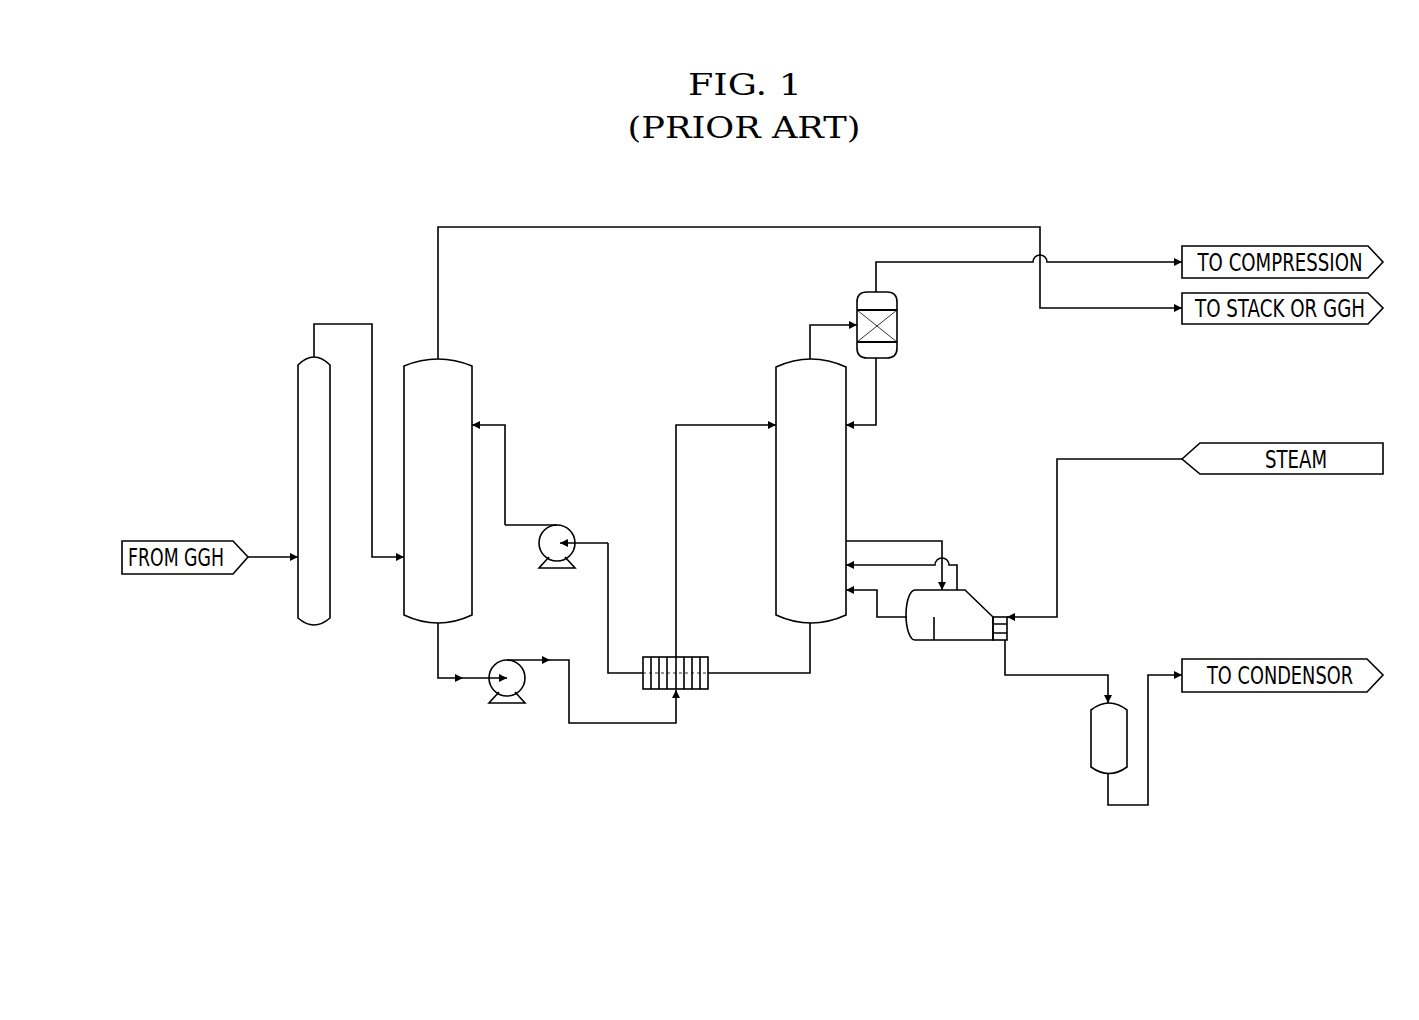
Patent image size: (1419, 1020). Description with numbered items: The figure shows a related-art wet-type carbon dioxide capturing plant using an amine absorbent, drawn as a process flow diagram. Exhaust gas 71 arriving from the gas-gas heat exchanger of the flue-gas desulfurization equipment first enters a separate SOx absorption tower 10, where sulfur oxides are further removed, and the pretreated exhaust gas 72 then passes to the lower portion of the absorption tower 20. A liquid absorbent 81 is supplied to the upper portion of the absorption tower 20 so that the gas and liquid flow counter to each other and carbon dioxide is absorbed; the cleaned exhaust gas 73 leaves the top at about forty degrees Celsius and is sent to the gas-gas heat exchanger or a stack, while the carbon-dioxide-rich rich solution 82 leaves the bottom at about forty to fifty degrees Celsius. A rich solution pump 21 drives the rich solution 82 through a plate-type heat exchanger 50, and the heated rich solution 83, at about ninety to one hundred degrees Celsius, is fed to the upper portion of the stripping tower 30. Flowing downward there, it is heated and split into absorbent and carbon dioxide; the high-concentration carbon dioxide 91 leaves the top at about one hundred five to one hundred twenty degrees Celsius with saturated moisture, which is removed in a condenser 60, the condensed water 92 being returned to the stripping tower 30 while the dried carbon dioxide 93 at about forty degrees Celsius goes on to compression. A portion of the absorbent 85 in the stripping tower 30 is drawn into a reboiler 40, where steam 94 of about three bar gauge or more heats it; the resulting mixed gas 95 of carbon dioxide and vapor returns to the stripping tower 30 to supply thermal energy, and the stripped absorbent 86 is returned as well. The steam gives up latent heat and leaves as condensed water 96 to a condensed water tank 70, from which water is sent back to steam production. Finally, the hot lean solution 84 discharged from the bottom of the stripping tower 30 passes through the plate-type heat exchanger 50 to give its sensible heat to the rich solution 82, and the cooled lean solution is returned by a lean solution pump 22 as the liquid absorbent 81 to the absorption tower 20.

The SOx absorption tower 10 is at (314, 628).
The absorption tower 20 is at (465, 360).
The stripping tower 30 is at (776, 390).
The reboiler 40 is at (960, 642).
The plate-type heat exchanger 50 is at (660, 655).
The condenser 60 is at (897, 325).
The condensed water tank 70 is at (1091, 736).
The rich solution pump 21 is at (505, 706).
The lean solution pump 22 is at (557, 575).
The exhaust gas 71 is at (262, 555).
The exhaust gas 72 is at (348, 322).
The exhaust gas 73 is at (598, 228).
The liquid absorbent 81 is at (505, 475).
The rich solution 82 is at (438, 660).
The rich solution 83 is at (692, 425).
The lean solution 84 is at (745, 672).
The absorbent 85 is at (898, 541).
The absorbent 86 is at (878, 620).
The high-concentration CO2 91 is at (823, 325).
The condensed water 92 is at (876, 398).
The CO2 93 is at (975, 264).
The steam 94 is at (1100, 459).
The mixed gas 95 is at (957, 568).
The condensed water 96 is at (1078, 673).